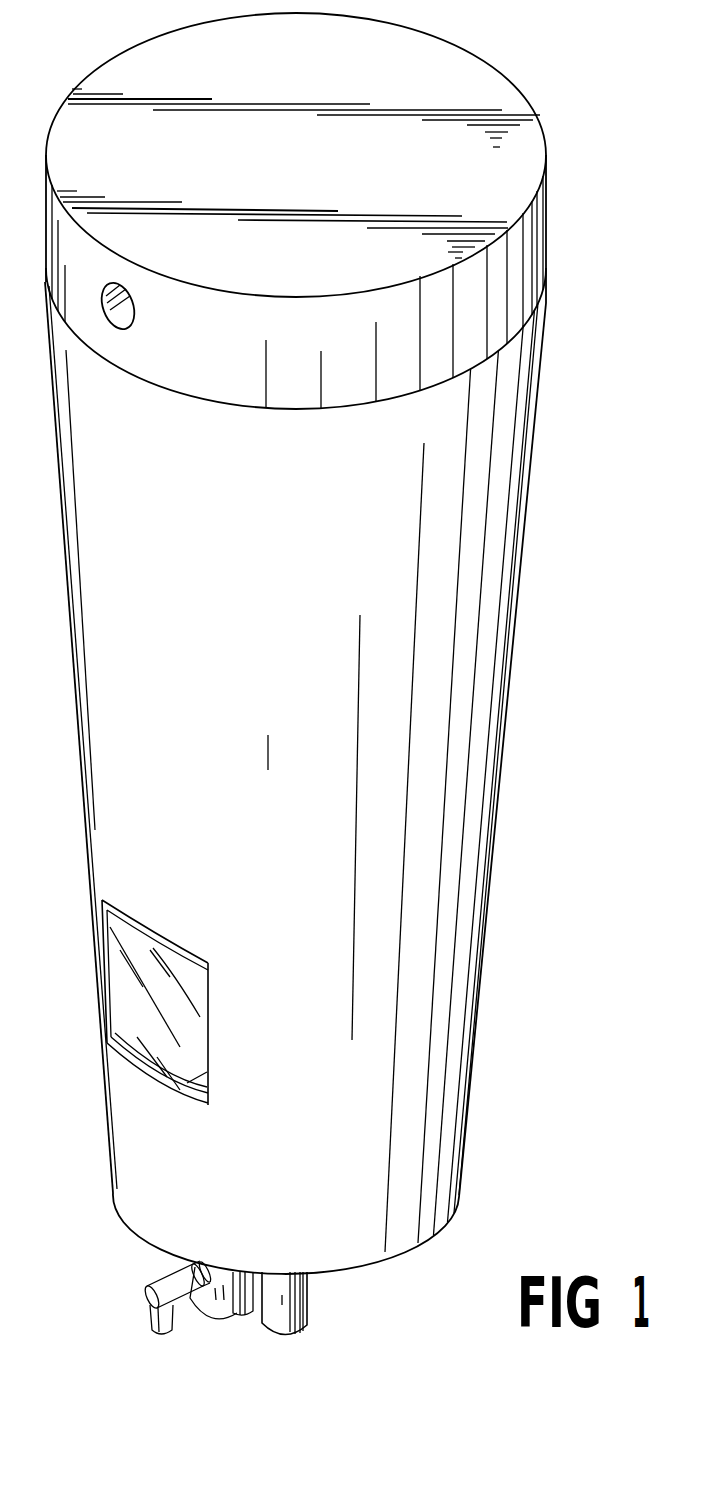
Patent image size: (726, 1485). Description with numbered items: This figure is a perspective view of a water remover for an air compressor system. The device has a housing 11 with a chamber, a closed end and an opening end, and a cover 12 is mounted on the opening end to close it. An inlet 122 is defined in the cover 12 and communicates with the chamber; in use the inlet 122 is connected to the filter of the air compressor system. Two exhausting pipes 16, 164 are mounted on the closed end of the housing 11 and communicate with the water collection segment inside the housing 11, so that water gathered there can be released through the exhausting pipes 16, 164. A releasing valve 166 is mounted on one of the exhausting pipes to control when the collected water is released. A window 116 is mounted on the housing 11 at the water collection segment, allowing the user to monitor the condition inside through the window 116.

The housing 11 is at (501, 540).
The cover 12 is at (532, 225).
The inlet 122 is at (122, 296).
The window 116 is at (178, 967).
The exhausting pipe 164 is at (235, 1278).
The releasing valve 166 is at (165, 1282).
The exhausting pipe 16 is at (293, 1303).